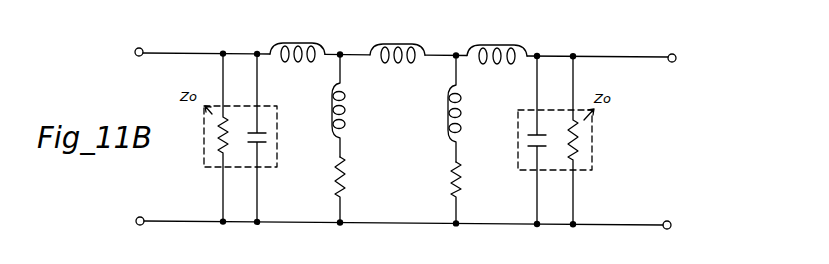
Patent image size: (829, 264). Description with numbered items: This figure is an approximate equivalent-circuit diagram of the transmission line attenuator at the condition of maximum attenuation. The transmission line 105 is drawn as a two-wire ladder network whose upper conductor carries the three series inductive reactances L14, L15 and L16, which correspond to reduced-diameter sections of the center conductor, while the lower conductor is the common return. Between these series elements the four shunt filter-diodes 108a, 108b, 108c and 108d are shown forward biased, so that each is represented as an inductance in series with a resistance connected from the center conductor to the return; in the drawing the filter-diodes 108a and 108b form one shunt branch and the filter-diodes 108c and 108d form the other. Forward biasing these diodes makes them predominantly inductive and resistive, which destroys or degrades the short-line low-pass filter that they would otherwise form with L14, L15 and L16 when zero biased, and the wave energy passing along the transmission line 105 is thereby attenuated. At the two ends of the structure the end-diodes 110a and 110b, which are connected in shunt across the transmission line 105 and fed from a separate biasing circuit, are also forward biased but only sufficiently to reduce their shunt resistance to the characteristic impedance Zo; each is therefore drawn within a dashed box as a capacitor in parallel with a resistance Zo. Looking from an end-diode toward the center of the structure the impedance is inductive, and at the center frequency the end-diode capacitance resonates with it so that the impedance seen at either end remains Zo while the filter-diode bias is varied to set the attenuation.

The series inductive reactance L14 is at (317, 36).
The series inductive reactance L15 is at (413, 37).
The series inductive reactance L16 is at (505, 37).
The filter-diode 108a is at (357, 114).
The filter-diode 108b is at (364, 178).
The filter-diode 108c is at (471, 116).
The filter-diode 108d is at (478, 179).
The end-diode 110a is at (277, 167).
The end-diode 110b is at (592, 170).
The transmission line 105 is at (379, 226).